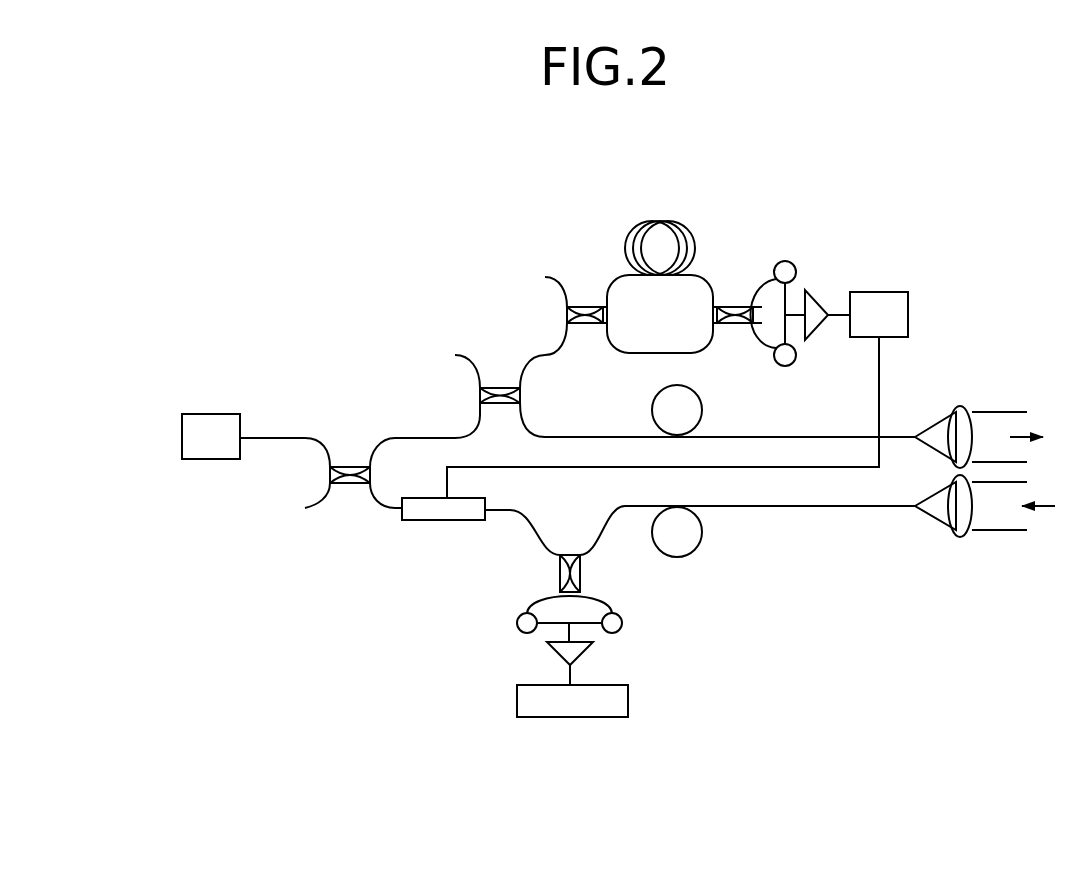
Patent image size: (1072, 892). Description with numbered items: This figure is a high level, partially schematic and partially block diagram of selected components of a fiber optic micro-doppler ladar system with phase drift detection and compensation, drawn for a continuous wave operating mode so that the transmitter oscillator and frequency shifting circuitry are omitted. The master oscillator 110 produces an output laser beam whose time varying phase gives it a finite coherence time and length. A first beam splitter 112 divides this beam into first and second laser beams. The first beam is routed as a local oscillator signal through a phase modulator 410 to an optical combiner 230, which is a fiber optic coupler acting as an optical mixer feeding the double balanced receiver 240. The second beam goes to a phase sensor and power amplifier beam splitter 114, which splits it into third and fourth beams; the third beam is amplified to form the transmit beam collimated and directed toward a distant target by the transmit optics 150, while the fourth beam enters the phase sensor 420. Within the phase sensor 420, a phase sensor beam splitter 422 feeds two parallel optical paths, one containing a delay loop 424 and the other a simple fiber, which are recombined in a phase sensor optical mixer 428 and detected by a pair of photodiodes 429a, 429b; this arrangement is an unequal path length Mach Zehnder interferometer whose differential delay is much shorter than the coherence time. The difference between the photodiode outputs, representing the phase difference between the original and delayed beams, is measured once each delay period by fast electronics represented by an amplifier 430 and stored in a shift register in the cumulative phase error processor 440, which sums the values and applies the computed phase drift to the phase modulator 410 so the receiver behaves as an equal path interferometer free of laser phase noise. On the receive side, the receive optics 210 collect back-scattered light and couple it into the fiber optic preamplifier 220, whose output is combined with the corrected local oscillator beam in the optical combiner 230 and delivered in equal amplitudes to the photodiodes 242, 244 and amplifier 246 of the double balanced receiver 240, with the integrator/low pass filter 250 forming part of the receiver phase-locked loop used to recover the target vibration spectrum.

The master oscillator 110 is at (207, 413).
The first beam splitter 112 is at (342, 460).
The phase sensor and power amplifier beam splitter 114 is at (498, 383).
The transmit optics 150 is at (960, 405).
The receive optics 210 is at (953, 533).
The preamplifier 220 is at (705, 536).
The optical combiner 230 is at (584, 571).
The double balanced receiver 240 is at (732, 626).
The photodiode 242 is at (621, 634).
The photodiode 244 is at (515, 614).
The amplifier 246 is at (546, 660).
The integrator/low pass filter 250 is at (602, 703).
The phase modulator 410 is at (447, 524).
The phase sensor 420 is at (517, 266).
The phase sensor beam splitter 422 is at (580, 303).
The delay loop 424 is at (693, 238).
The phase sensor optical mixer 428 is at (732, 302).
The photodiode 429a is at (802, 265).
The photodiode 429b is at (795, 364).
The amplifier 430 is at (815, 330).
The cumulative phase error processor 440 is at (910, 292).